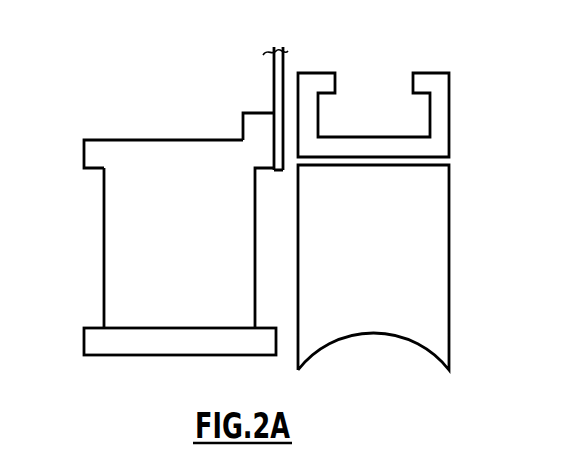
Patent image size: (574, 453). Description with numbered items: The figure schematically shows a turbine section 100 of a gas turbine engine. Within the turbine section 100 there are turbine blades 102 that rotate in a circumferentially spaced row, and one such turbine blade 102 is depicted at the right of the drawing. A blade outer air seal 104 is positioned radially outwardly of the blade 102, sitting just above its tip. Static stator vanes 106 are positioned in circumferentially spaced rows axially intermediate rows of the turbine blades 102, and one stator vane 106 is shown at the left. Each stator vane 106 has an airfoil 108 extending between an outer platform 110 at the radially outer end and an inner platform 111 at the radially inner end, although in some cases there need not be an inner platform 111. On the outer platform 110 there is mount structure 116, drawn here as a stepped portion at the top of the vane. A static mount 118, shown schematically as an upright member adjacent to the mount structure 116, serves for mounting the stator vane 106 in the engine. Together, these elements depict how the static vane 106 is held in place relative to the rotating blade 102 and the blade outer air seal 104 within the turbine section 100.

The turbine section 100 is at (150, 47).
The turbine blades 102 is at (443, 248).
The blade outer air seal 104 is at (442, 143).
The stator vanes 106 is at (132, 278).
The airfoil 108 is at (132, 220).
The outer platform 110 is at (100, 155).
The inner platform 111 is at (110, 340).
The mount structure 116 is at (258, 127).
The static mount 118 is at (278, 68).